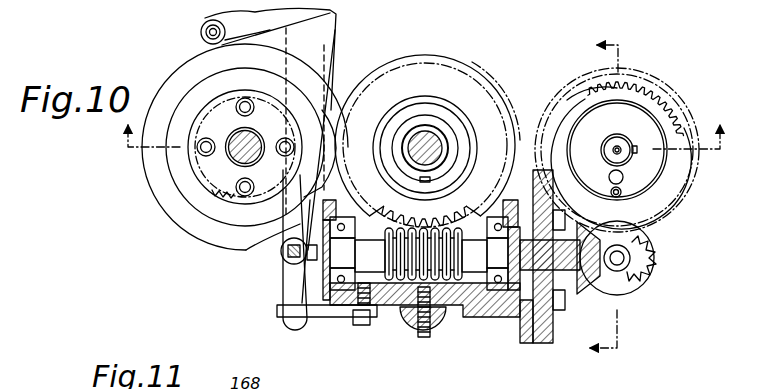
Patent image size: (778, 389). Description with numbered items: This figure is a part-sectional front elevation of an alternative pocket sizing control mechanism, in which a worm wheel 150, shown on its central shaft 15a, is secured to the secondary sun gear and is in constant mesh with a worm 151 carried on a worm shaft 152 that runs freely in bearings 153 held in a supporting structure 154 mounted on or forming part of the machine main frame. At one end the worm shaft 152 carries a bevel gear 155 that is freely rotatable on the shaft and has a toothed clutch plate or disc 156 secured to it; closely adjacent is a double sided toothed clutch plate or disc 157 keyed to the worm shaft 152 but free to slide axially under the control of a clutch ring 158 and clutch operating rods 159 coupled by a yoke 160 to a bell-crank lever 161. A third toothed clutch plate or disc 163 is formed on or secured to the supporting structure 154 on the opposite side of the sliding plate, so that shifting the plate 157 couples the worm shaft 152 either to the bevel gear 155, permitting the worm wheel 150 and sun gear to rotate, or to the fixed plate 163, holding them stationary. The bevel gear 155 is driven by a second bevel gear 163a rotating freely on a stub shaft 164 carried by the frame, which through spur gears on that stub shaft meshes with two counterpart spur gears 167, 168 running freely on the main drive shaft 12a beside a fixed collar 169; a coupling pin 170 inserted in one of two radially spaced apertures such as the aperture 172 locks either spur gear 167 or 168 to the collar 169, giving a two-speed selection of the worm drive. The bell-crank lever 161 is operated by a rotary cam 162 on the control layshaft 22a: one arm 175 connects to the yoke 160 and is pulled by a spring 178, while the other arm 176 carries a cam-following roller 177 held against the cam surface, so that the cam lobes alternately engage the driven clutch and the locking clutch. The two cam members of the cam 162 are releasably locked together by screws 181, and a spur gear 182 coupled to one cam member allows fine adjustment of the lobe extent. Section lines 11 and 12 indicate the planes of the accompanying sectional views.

The section line 11- 11 is at (616, 203).
The section line 12- 12 is at (423, 150).
The main drive shaft 12a is at (610, 147).
The worm wheel shaft 15a is at (432, 140).
The control layshaft 22a is at (213, 160).
The worm wheel 150 is at (437, 60).
The worm 151 is at (403, 290).
The worm shaft 152 is at (565, 288).
The bearings 153 is at (338, 305).
The supporting structure 154 is at (392, 300).
The bevel gear 155 is at (610, 290).
The toothed clutch plate or disc 156 is at (550, 340).
The double sided toothed clutch plate or disc 157 is at (533, 313).
The clutch ring 158 is at (513, 313).
The clutch operating rods 159 is at (305, 258).
The yoke 160 is at (283, 255).
The bell-crank lever 161 is at (318, 33).
The rotary cam 162 is at (182, 210).
The third toothed clutch plate or disc 163 is at (523, 345).
The second bevel gear 163a is at (656, 258).
The stub shaft 164 is at (650, 272).
The spur gear 167 is at (593, 92).
The spur gear 168 is at (652, 88).
The fixed collar 169 is at (645, 120).
The coupling pin 170 is at (624, 179).
The aperture 172 is at (622, 194).
The arm 175 is at (288, 288).
The arm 176 is at (247, 28).
The cam-following roller 177 is at (203, 28).
The spring 178 is at (318, 330).
The screws 181 is at (205, 143).
The spur gear 182 is at (218, 197).